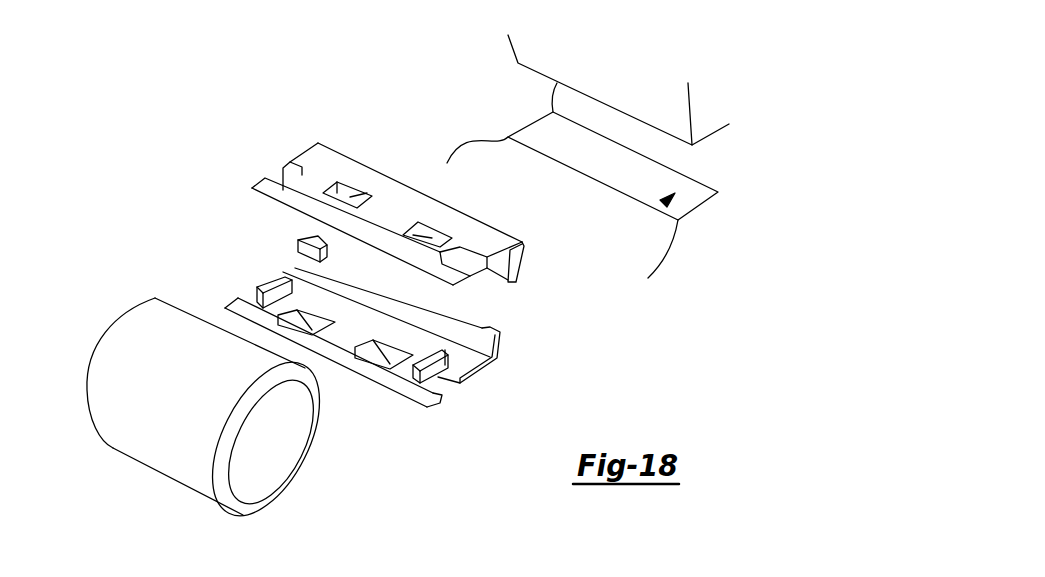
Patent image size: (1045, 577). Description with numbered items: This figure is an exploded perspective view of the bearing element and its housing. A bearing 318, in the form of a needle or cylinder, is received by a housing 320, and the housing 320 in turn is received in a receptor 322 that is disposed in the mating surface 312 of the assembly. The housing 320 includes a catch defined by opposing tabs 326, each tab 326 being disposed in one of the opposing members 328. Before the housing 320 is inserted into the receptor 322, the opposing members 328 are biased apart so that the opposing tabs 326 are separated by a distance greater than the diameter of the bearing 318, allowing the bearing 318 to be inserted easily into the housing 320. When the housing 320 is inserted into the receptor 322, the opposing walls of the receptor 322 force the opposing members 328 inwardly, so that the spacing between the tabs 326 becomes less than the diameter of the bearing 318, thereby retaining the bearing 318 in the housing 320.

The mating surface 312 is at (657, 108).
The bearing 318 is at (174, 385).
The housing 320 is at (342, 138).
The receptor 322 is at (698, 162).
The tabs 326 is at (370, 200).
The opposing members 328 is at (392, 193).